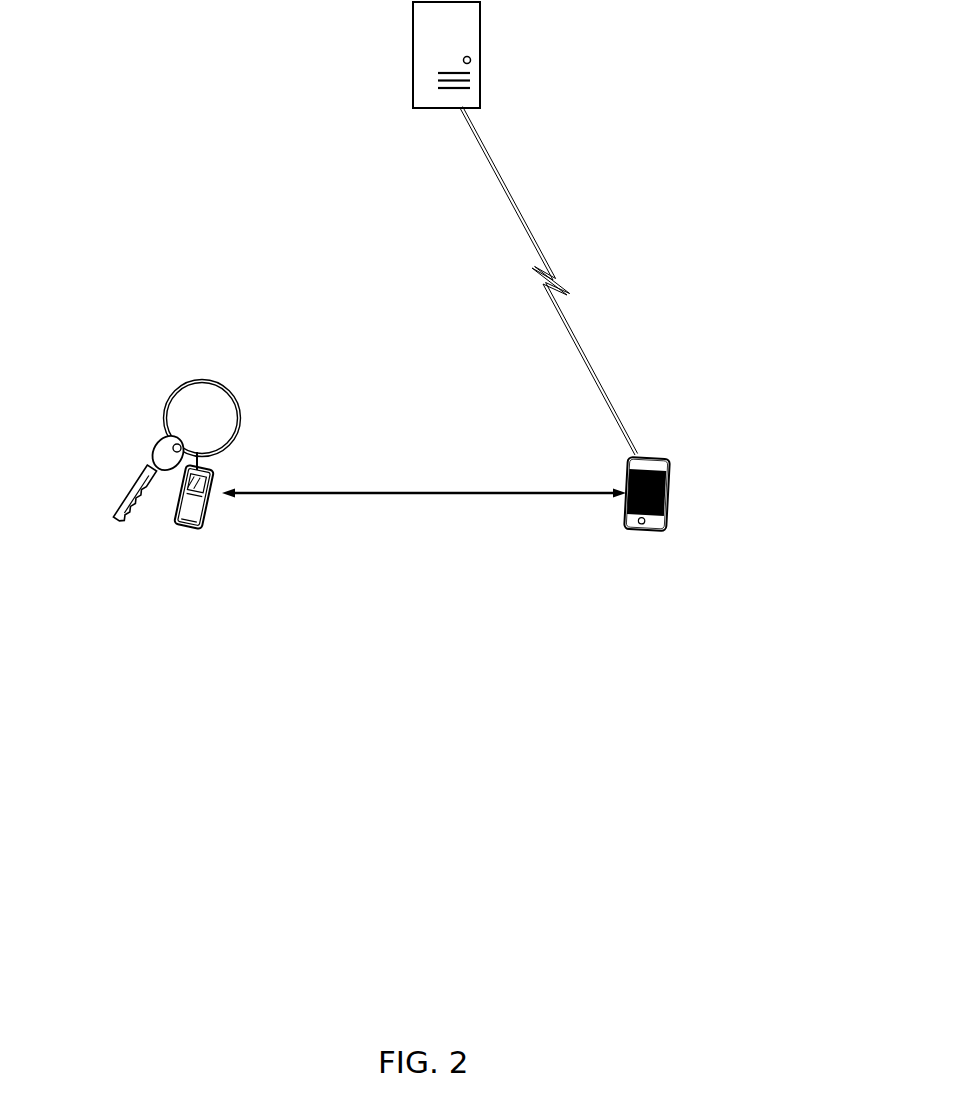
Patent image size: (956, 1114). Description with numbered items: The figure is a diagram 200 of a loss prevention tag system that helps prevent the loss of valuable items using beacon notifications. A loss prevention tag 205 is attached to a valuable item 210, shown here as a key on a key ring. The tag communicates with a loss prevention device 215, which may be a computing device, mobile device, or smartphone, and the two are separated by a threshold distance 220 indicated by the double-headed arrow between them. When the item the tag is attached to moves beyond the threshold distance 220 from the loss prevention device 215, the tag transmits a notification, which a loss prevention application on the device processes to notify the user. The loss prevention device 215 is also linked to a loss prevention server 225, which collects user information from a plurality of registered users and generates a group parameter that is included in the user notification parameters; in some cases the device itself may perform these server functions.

The diagram 200 is at (721, 1009).
The loss prevention tag 205 is at (188, 528).
The valuable item 210 is at (118, 520).
The loss prevention device 215 is at (652, 530).
The threshold distance 220 is at (443, 528).
The loss prevention server 225 is at (440, 108).